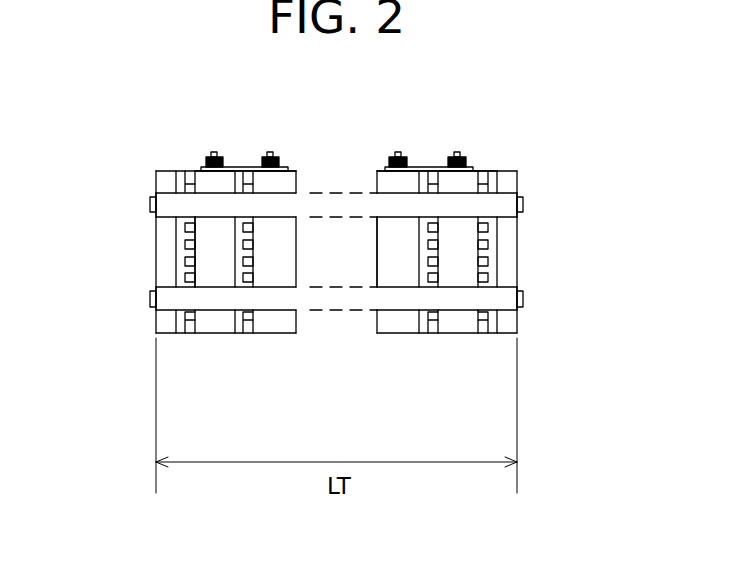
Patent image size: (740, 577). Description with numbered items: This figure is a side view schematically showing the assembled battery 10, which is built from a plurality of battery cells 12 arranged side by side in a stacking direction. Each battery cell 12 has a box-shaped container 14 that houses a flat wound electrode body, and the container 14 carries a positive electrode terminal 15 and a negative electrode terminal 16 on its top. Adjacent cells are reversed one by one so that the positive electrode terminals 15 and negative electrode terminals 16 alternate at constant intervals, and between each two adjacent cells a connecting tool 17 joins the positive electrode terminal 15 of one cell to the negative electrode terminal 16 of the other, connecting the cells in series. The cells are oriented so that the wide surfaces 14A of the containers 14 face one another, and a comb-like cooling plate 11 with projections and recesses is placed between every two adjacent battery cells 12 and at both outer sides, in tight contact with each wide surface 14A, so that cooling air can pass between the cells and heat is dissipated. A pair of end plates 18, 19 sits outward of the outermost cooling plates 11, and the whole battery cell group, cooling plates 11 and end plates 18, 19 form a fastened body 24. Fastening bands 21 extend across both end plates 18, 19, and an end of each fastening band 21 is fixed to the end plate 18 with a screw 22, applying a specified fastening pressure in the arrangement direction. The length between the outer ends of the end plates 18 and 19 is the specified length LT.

The assembled battery 10 is at (618, 131).
The cooling plate 11 is at (184, 334).
The battery cell 12 is at (297, 256).
The container 14 is at (302, 271).
The wide surface of container 14A is at (190, 171).
The positive electrode terminal 15 is at (213, 156).
The negative electrode terminal 16 is at (273, 156).
The connecting tool 17 is at (242, 167).
The end plate 18 is at (508, 252).
The end plate 19 is at (167, 262).
The fastening band 21 is at (273, 198).
The screw 22 is at (150, 210).
The fastened body 24 is at (493, 154).